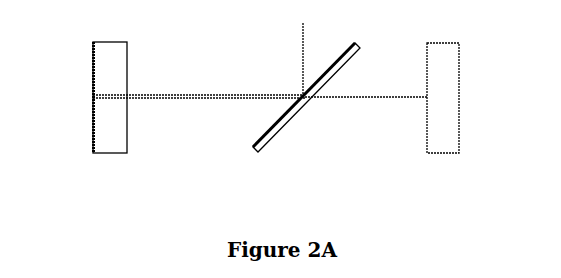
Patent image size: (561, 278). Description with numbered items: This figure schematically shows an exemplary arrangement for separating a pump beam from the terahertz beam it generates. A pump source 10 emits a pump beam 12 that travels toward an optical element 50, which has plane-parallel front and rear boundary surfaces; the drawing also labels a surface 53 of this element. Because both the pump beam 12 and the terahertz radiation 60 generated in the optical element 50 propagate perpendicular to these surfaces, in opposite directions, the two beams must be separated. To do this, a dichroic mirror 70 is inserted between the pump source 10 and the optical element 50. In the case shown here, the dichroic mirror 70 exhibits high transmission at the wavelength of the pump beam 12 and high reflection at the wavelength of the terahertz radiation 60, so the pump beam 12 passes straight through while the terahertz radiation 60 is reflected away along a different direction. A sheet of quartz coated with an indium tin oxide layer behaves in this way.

The pump source 10 is at (459, 78).
The pump beam 12 is at (384, 94).
The optical element 50 is at (105, 154).
The reflective surface 53 is at (92, 123).
The terahertz radiation 60 is at (303, 77).
The dichroic mirror 70 is at (285, 125).